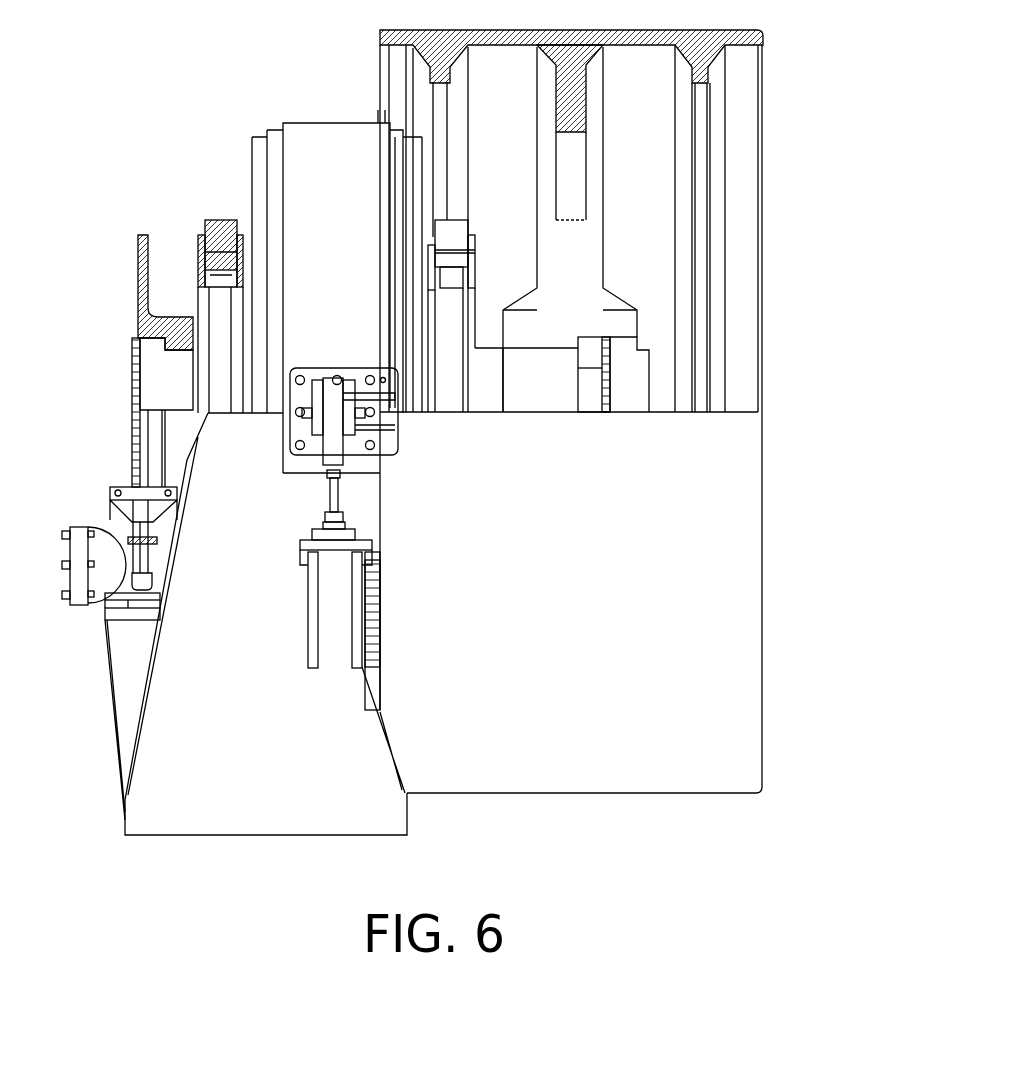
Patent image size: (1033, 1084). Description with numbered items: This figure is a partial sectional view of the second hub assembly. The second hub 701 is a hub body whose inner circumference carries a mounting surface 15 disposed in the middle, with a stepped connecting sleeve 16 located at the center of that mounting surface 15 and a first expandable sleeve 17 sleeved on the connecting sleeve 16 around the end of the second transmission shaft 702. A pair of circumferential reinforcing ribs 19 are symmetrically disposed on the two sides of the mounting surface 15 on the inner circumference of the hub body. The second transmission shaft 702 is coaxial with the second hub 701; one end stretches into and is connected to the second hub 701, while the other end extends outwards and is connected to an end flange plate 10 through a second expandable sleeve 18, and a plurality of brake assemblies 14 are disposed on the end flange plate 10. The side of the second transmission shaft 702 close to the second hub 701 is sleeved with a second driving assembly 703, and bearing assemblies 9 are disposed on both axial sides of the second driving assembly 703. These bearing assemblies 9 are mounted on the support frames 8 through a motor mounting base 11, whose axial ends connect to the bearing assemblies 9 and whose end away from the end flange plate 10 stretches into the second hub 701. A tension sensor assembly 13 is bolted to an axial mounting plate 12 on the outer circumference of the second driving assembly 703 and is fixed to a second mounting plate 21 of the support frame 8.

The support frame 8 is at (198, 727).
The bearing assembly 9 is at (793, 203).
The end flange plate 10 is at (140, 273).
The motor mounting base 11 is at (342, 473).
The axial mounting plate 12 is at (390, 405).
The tension sensor assembly 13 is at (370, 482).
The brake assembly 14 is at (135, 558).
The mounting surface 15 is at (568, 108).
The stepped connecting sleeve 16 is at (610, 320).
The first expandable sleeve 17 is at (610, 363).
The second expandable sleeve 18 is at (138, 380).
The circumferential reinforcing rib 19 is at (800, 78).
The second mounting plate 21 is at (358, 548).
The second hub 701 is at (720, 565).
The second transmission shaft 702 is at (550, 393).
The second driving assembly 703 is at (312, 158).